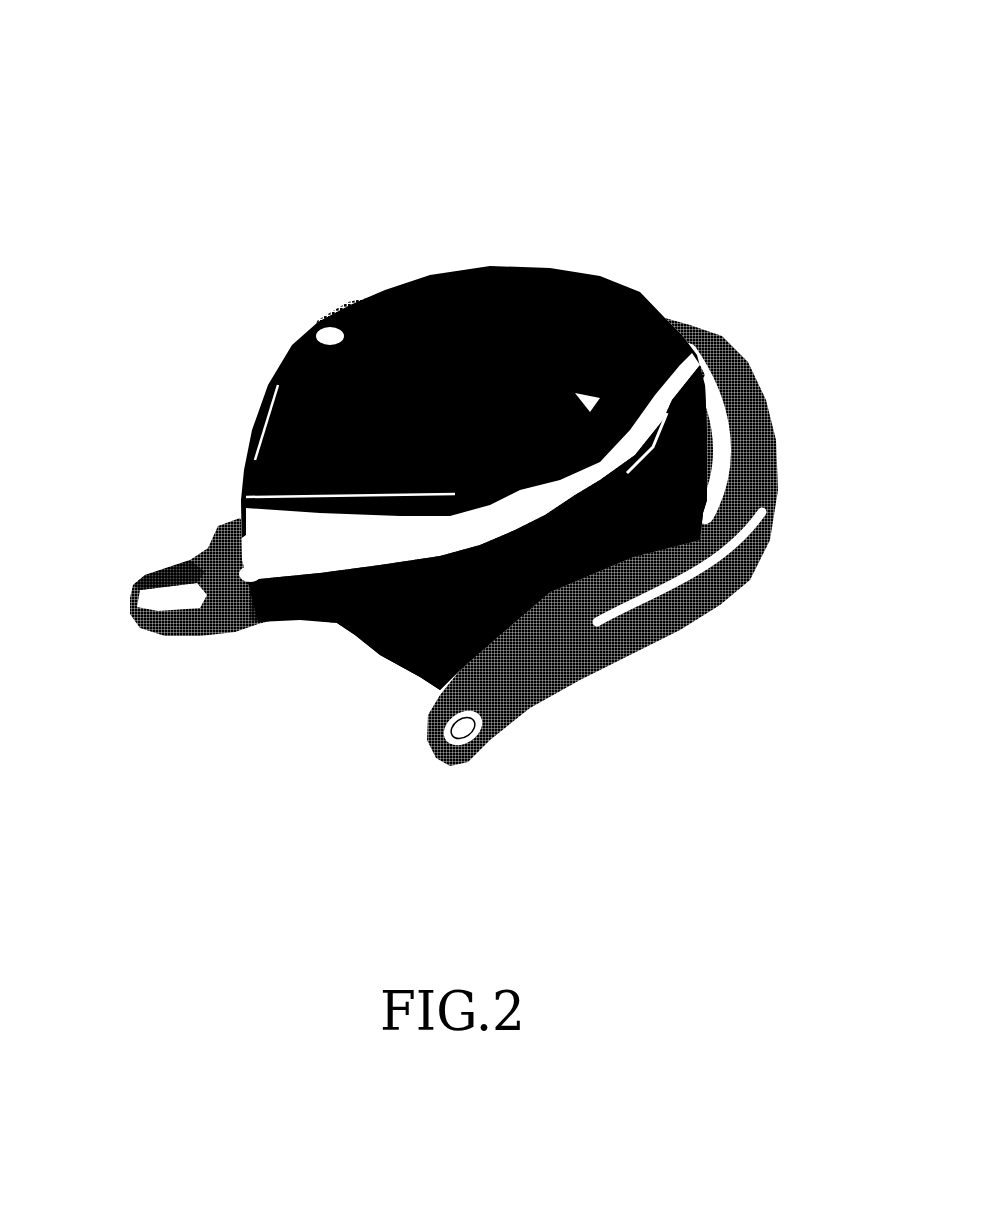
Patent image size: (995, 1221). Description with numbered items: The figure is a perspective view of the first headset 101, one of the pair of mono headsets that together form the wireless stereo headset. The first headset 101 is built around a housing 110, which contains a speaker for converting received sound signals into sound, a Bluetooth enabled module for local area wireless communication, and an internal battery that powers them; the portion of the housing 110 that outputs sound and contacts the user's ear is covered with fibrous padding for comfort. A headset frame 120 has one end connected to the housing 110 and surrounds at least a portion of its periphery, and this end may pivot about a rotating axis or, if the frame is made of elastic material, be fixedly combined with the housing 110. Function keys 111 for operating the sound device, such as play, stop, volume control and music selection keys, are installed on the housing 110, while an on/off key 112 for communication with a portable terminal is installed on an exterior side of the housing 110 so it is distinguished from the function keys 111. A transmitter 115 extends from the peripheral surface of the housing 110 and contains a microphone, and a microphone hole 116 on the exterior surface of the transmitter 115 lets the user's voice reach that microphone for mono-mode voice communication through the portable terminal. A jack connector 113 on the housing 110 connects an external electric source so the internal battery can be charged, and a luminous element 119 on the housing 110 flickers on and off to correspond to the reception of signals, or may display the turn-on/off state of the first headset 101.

The first headset 101 is at (492, 75).
The housing 110 is at (280, 437).
The function keys 111 is at (657, 475).
The on/off key 112 is at (360, 327).
The jack connector 113 is at (380, 647).
The transmitter 115 is at (200, 597).
The microphone hole 116 is at (167, 577).
The luminous element 119 is at (613, 360).
The headset frame 120 is at (740, 390).